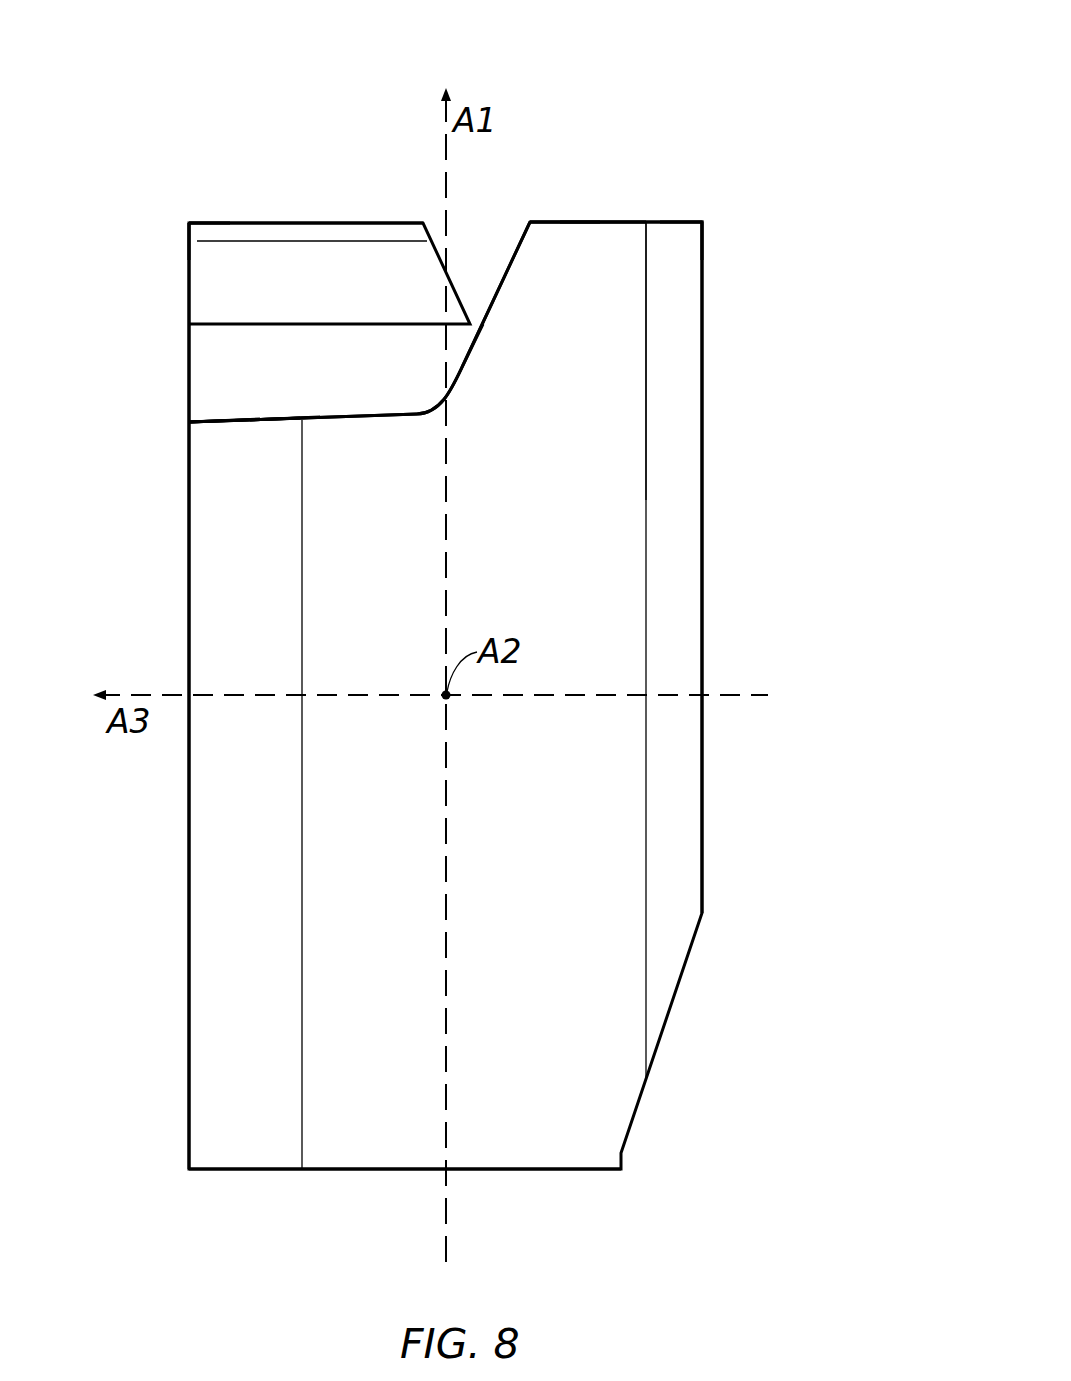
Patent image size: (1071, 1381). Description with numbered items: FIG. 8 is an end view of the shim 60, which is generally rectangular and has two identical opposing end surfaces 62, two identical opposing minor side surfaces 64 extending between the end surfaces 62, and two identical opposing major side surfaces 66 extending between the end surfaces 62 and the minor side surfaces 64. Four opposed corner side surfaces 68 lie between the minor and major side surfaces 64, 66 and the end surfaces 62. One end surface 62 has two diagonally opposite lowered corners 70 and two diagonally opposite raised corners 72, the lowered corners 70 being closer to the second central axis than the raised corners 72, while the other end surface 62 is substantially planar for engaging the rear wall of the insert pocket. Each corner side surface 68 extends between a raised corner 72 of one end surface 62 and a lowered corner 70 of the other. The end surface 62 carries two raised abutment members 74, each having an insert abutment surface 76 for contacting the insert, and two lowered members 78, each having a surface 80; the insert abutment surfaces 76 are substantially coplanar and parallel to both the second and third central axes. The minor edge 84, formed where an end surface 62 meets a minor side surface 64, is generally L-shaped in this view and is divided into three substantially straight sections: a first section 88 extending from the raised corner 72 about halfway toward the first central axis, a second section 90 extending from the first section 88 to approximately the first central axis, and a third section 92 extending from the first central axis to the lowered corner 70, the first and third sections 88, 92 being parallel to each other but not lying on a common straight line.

The shim 60 is at (741, 60).
The end surface 62 is at (566, 211).
The minor side surface 64 is at (622, 551).
The major side surface 66 is at (707, 456).
The corner side surface 68 is at (665, 408).
The lowered corner 70 is at (187, 421).
The raised corner 72 is at (189, 216).
The raised abutment member 74 is at (233, 289).
The insert abutment surface 76 is at (366, 221).
The lowered member 78 is at (242, 412).
The surface 80 is at (215, 418).
The minor edge 84 is at (461, 363).
The first section 88 is at (597, 221).
The second section 90 is at (507, 267).
The third section 92 is at (280, 417).